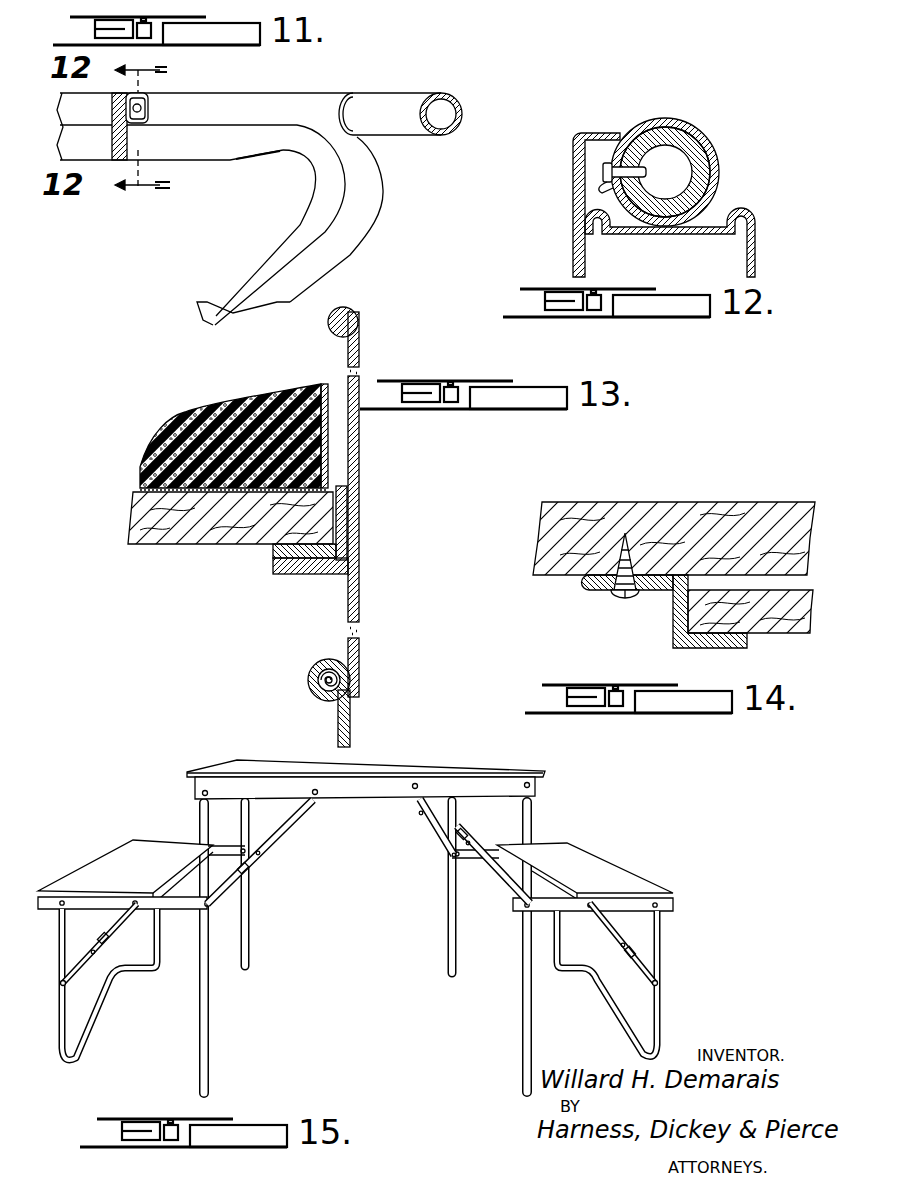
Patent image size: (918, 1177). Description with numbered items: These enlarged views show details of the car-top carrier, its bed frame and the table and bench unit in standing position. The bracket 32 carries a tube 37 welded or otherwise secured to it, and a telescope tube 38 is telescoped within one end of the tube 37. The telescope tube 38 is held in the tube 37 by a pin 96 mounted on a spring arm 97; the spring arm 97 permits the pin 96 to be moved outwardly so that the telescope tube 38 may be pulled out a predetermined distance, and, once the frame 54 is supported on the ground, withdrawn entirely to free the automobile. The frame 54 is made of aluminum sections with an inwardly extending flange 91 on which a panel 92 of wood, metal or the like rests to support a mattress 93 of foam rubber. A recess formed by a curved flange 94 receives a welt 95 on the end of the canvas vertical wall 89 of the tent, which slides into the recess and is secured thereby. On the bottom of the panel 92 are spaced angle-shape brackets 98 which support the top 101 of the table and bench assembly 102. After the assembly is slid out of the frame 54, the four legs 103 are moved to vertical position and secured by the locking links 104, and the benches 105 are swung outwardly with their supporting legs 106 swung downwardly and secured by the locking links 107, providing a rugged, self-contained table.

In FIG. 11, the bracket 32 is at (355, 227).
In FIG. 12, the bracket 32 is at (762, 249).
In FIG. 11, the tube 37 is at (303, 95).
In FIG. 12, the tube 37 is at (716, 172).
In FIG. 11, the telescope tube 38 is at (403, 93).
In FIG. 12, the telescope tube 38 is at (703, 195).
In FIG. 13, the frame 54 is at (361, 463).
In FIG. 13, the vertical wall 89 is at (351, 717).
In FIG. 13, the inwardly extending flange 91 is at (302, 574).
In FIG. 13, the panel 92 is at (157, 544).
In FIG. 14, the panel 92 is at (550, 543).
In FIG. 13, the mattress 93 is at (185, 416).
In FIG. 13, the curved flange 94 is at (306, 678).
In FIG. 13, the welt 95 is at (354, 672).
In FIG. 11, the pin 96 is at (145, 108).
In FIG. 12, the pin 96 is at (647, 172).
In FIG. 11, the spring arm 97 is at (112, 104).
In FIG. 12, the spring arm 97 is at (573, 158).
In FIG. 14, the angle-shape bracket 98 is at (672, 622).
In FIG. 14, the top 101 is at (787, 620).
In FIG. 15, the top 101 is at (445, 766).
In FIG. 15, the table and bench assembly 102 is at (388, 796).
In FIG. 15, the leg 103 is at (253, 932).
In FIG. 15, the locking link 104 is at (275, 838).
In FIG. 15, the bench 105 is at (117, 855).
In FIG. 15, the supporting leg 106 is at (103, 1016).
In FIG. 15, the locking link 107 is at (121, 927).